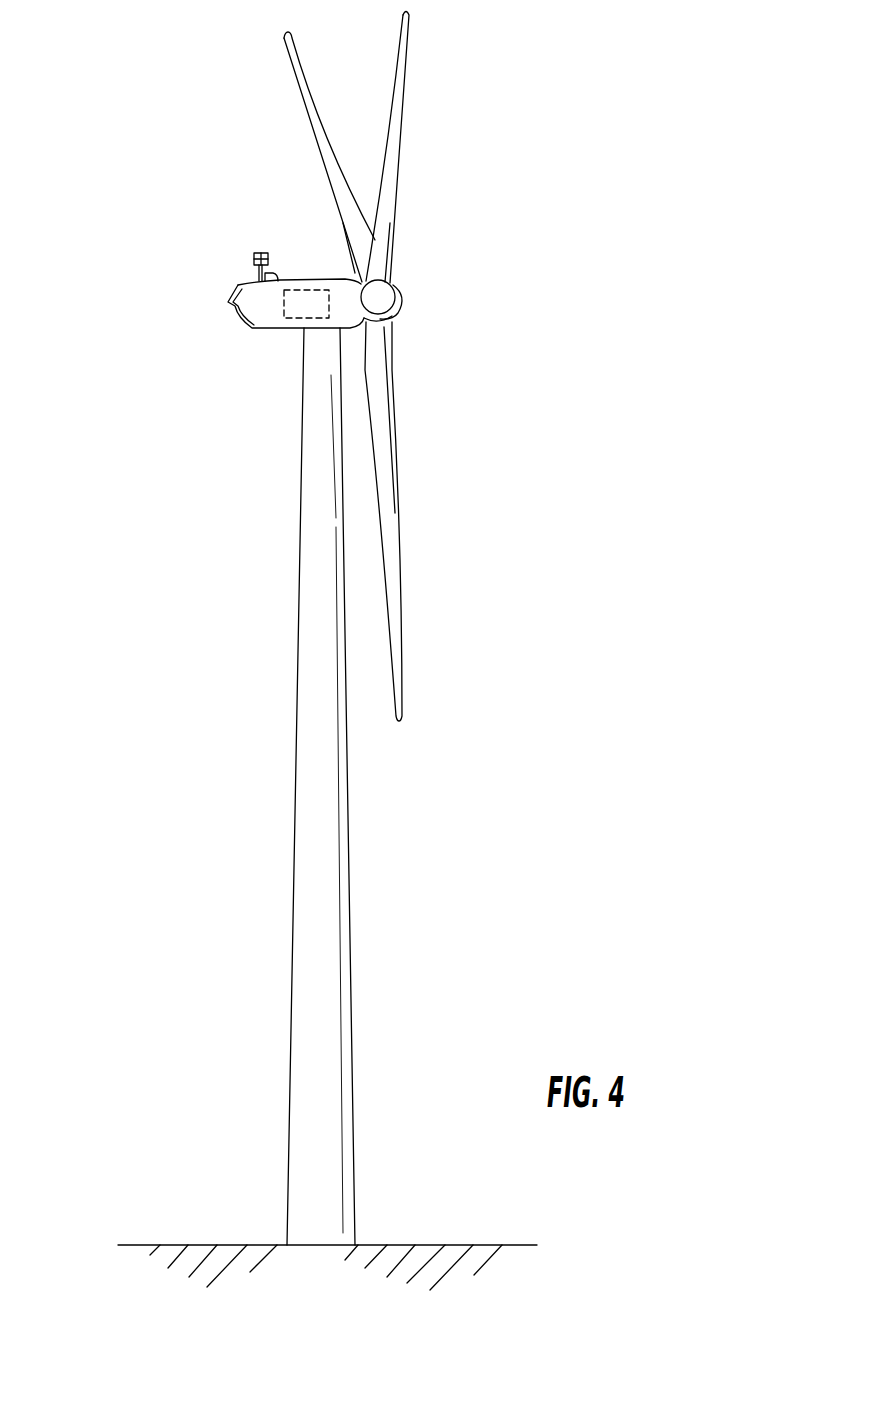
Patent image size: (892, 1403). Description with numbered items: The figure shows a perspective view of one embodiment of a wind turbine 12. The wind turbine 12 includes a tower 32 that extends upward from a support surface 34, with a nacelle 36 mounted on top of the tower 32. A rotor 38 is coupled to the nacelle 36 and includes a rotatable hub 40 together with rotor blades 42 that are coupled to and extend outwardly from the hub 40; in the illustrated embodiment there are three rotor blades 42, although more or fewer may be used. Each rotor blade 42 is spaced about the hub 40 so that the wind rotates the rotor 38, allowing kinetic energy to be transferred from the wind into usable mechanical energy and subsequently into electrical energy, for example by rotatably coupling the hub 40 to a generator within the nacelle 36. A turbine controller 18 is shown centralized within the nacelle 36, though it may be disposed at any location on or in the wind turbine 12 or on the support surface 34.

The wind turbine 12 is at (510, 103).
The turbine controller 18 is at (307, 287).
The tower 32 is at (305, 911).
The support surface 34 is at (204, 1243).
The nacelle 36 is at (275, 330).
The rotor 38 is at (411, 272).
The rotatable hub 40 is at (403, 302).
The rotor blade 42 is at (392, 142).